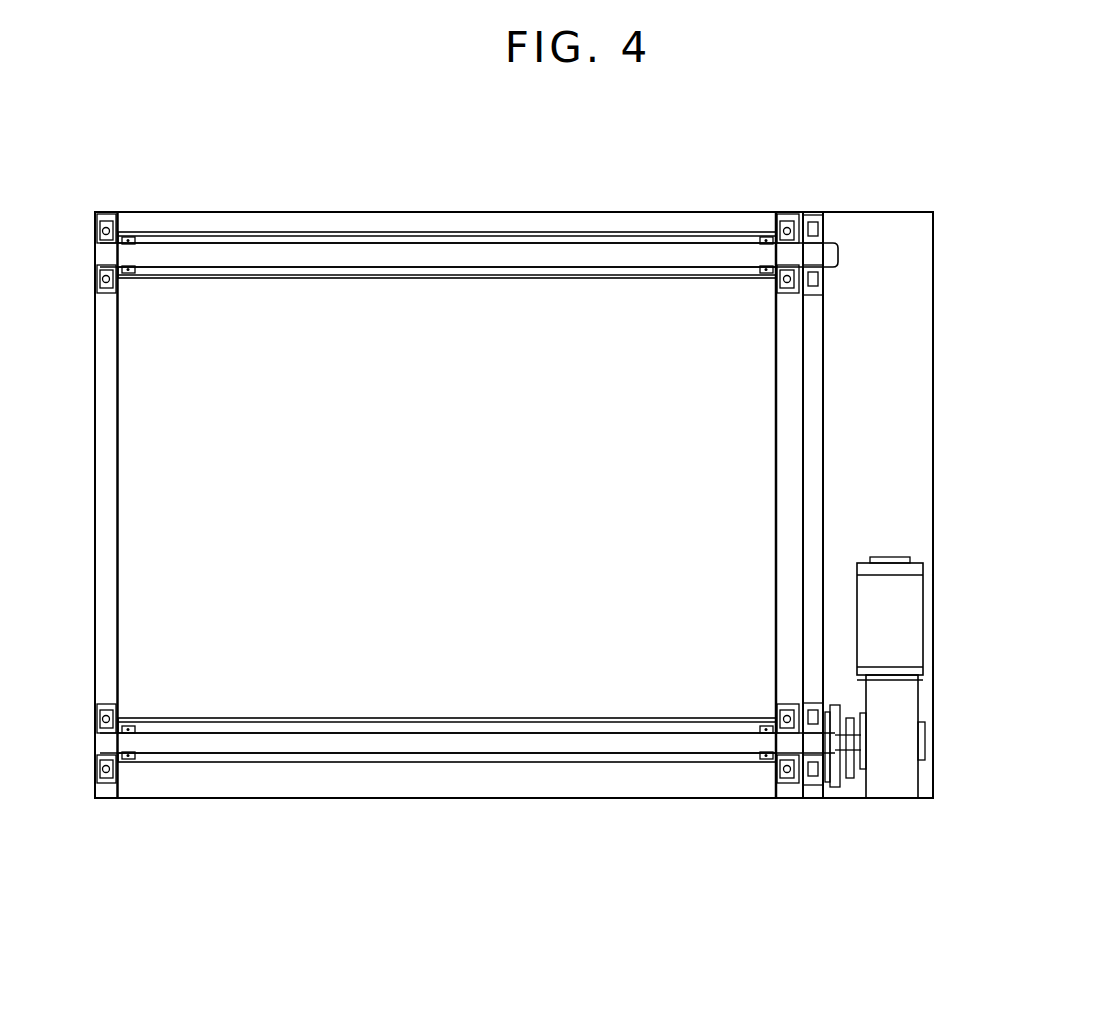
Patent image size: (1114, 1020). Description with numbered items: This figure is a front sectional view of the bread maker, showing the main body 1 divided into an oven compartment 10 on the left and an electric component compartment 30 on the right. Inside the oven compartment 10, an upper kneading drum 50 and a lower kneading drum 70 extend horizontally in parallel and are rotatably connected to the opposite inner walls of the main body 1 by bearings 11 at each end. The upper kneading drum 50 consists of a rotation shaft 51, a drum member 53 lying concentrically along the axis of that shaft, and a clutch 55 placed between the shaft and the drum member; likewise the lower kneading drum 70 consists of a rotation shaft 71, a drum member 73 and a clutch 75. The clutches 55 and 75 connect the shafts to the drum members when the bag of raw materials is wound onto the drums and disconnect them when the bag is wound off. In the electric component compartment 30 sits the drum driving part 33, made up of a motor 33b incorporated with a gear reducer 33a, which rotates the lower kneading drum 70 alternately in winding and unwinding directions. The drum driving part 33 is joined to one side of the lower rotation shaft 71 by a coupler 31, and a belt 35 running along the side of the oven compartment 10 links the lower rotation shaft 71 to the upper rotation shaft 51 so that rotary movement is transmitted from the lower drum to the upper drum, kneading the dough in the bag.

The main body 1 is at (432, 200).
The oven compartment 10 is at (278, 322).
The bearings 11 is at (104, 216).
The electric component compartment 30 is at (897, 470).
The coupler 31 is at (841, 778).
The drum driving part 33 is at (968, 677).
The gear reducer 33a is at (941, 736).
The motor 33b is at (905, 628).
The belt 35 is at (818, 349).
The upper kneading drum 50 is at (469, 185).
The rotation shaft 51 is at (645, 250).
The drum member 53 is at (537, 234).
The clutch 55 is at (537, 141).
The lower kneading drum 70 is at (467, 812).
The rotation shaft 71 is at (192, 746).
The drum member 73 is at (255, 722).
The clutch 75 is at (253, 869).